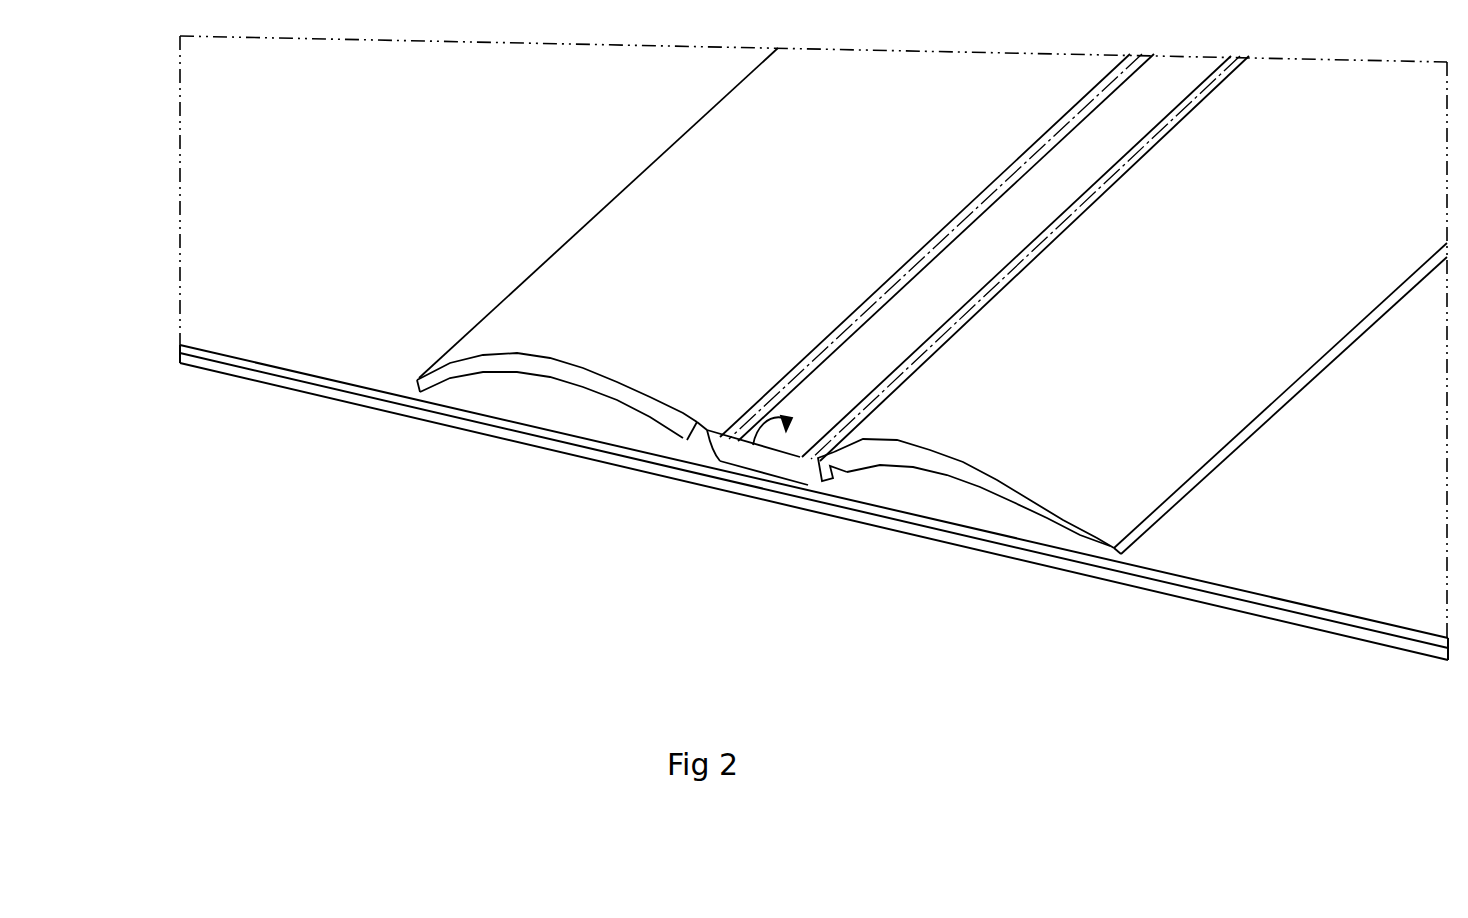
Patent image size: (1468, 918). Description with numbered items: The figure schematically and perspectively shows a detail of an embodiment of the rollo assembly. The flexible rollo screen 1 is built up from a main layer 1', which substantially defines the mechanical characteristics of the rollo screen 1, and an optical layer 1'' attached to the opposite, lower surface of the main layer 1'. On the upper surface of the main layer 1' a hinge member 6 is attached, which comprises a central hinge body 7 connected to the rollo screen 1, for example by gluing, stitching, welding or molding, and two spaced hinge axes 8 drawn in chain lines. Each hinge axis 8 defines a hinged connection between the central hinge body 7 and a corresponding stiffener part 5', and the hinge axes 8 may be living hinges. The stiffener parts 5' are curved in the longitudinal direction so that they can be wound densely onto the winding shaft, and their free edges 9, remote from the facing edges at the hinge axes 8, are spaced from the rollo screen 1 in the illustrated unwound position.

The rollo screen 1 is at (814, 502).
The main layer 1' is at (814, 516).
The optical layer 1'' is at (814, 516).
The stiffener parts 5' is at (932, 323).
The hinge member 6 is at (751, 448).
The central hinge body 7 is at (773, 460).
The hinge axes 8 is at (820, 344).
The free edges 9 is at (408, 392).